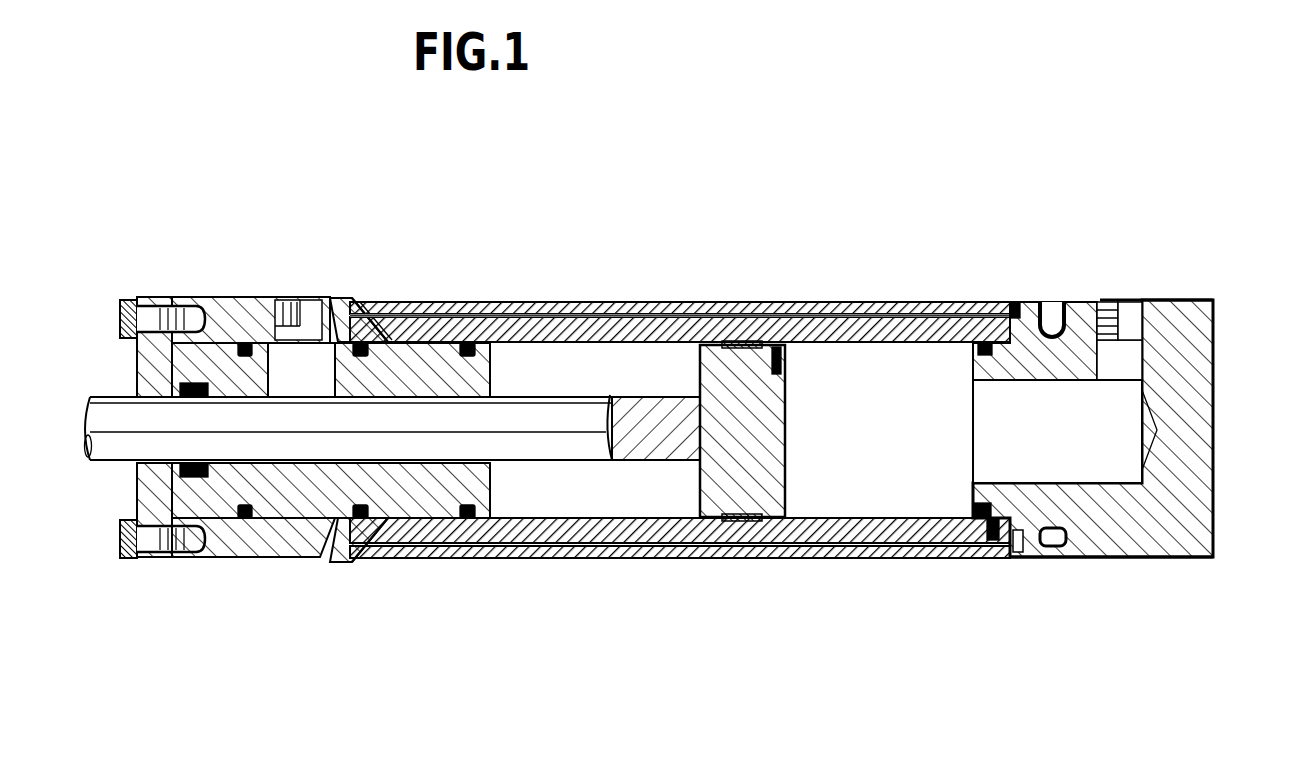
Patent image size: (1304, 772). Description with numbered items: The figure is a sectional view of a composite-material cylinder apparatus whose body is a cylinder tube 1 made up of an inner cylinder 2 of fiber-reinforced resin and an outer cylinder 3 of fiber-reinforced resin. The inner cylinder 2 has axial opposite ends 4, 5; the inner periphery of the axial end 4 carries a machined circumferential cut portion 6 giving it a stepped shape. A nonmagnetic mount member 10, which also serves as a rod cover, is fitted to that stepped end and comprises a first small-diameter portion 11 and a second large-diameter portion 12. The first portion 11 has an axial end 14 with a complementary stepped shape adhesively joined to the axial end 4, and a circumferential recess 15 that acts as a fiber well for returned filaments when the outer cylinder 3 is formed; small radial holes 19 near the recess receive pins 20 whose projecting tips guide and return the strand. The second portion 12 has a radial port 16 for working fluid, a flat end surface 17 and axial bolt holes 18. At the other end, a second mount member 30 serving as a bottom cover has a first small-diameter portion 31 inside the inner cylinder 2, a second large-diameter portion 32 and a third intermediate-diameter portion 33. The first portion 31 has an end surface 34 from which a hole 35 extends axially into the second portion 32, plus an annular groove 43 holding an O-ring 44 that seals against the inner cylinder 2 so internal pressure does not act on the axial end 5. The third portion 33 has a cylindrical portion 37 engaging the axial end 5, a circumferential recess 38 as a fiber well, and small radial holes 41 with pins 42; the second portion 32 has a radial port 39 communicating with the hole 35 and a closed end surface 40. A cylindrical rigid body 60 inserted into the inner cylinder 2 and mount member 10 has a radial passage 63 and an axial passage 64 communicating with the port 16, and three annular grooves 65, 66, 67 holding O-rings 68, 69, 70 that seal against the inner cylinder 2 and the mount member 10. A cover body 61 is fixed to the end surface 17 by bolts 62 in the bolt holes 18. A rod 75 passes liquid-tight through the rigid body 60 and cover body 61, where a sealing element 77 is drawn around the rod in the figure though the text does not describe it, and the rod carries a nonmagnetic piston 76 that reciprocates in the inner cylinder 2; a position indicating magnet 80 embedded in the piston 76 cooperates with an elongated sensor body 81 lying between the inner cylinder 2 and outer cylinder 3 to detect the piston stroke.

The cylinder tube 1 is at (895, 298).
The inner cylinder 2 is at (815, 335).
The outer cylinder 3 is at (725, 335).
The axial end 4 is at (535, 320).
The axial end 5 is at (968, 305).
The circumferential cut portion 6 is at (446, 548).
The mount member 10 is at (262, 318).
The first small-diameter portion 11 is at (400, 542).
The second large-diameter portion 12 is at (283, 557).
The axial end 14 is at (396, 312).
The circumferential recess 15 is at (378, 318).
The radial port 16 is at (312, 312).
The flat end surface 17 is at (163, 303).
The axial bolt holes 18 is at (190, 557).
The small radial holes 19 is at (432, 545).
The pin 20 is at (430, 312).
The second mount member 30 is at (1183, 318).
The first small-diameter portion 31 is at (977, 370).
The second large-diameter portion 32 is at (1193, 520).
The third intermediate-diameter portion 33 is at (1040, 372).
The end surface 34 is at (975, 505).
The hole 35 is at (1038, 473).
The cylindrical portion 37 is at (1040, 315).
The circumferential recess 38 is at (1066, 320).
The radial port 39 is at (1128, 318).
The closed end surface 40 is at (1215, 360).
The small radial holes 41 is at (1045, 557).
The pins 42 is at (1015, 302).
The annular groove 43 is at (985, 557).
The O-ring 44 is at (975, 350).
The rigid body 60 is at (310, 557).
The cover body 61 is at (141, 362).
The bolts 62 is at (122, 315).
The radial passage 63 is at (283, 389).
The axial passage 64 is at (478, 378).
The annular groove 65 is at (480, 347).
The annular groove 66 is at (360, 343).
The annular groove 67 is at (245, 343).
The O-ring 68 is at (478, 557).
The O-ring 69 is at (362, 520).
The O-ring 70 is at (246, 520).
The rod 75 is at (585, 447).
The piston 76 is at (775, 462).
The rod seal 77 is at (190, 470).
The position indicating magnet 80 is at (785, 360).
The sensor body 81 is at (640, 330).